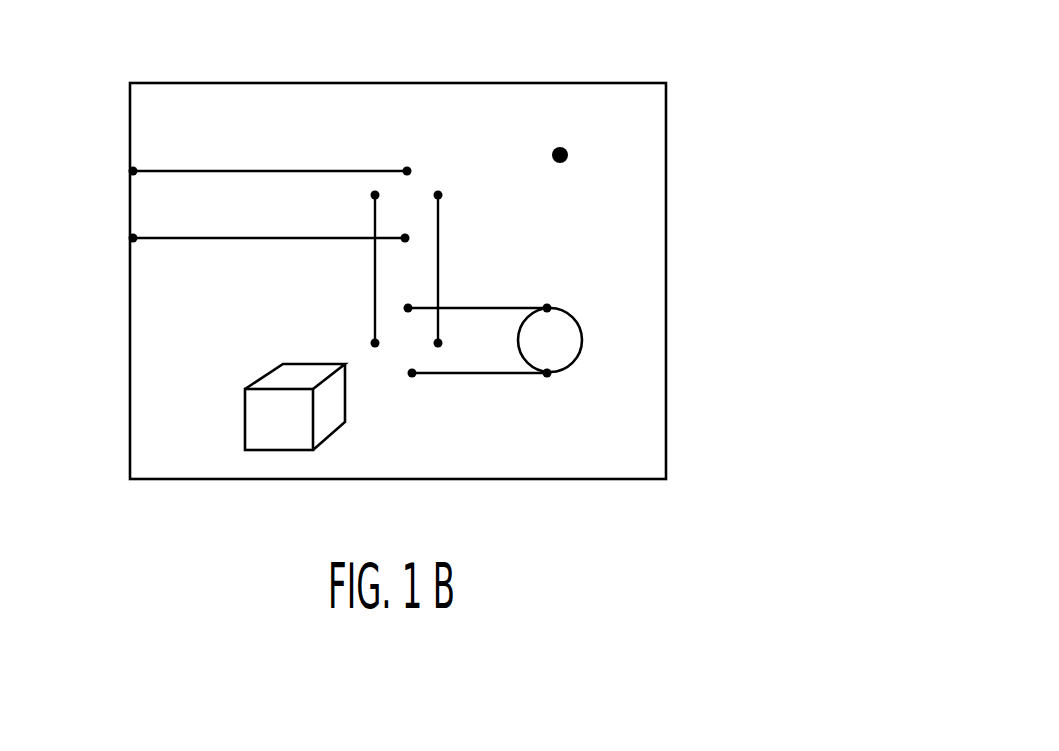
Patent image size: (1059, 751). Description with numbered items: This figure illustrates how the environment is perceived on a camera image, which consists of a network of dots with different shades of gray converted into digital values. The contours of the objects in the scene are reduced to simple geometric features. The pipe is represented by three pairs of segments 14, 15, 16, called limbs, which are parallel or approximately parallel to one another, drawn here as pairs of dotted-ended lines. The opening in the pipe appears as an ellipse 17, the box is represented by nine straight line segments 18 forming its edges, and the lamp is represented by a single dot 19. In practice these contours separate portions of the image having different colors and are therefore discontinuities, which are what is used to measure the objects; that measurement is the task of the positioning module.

The pair of parallel segments 14 is at (170, 163).
The pair of parallel segments 15 is at (450, 245).
The pair of parallel segments 16 is at (503, 382).
The ellipse 17 is at (597, 333).
The straight line segments 18 is at (263, 371).
The dot 19 is at (566, 138).